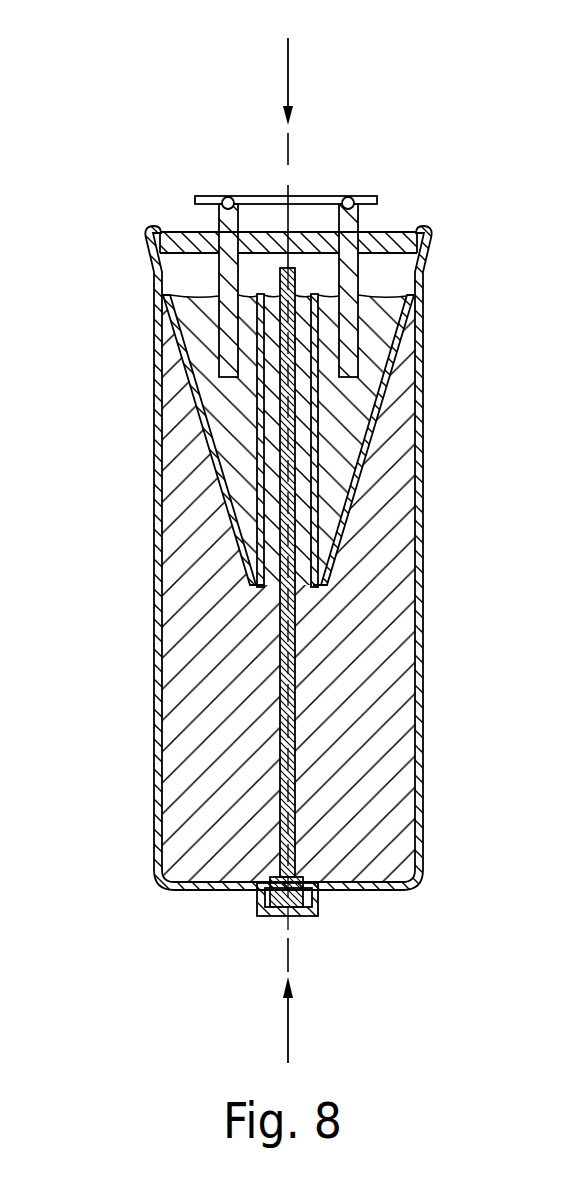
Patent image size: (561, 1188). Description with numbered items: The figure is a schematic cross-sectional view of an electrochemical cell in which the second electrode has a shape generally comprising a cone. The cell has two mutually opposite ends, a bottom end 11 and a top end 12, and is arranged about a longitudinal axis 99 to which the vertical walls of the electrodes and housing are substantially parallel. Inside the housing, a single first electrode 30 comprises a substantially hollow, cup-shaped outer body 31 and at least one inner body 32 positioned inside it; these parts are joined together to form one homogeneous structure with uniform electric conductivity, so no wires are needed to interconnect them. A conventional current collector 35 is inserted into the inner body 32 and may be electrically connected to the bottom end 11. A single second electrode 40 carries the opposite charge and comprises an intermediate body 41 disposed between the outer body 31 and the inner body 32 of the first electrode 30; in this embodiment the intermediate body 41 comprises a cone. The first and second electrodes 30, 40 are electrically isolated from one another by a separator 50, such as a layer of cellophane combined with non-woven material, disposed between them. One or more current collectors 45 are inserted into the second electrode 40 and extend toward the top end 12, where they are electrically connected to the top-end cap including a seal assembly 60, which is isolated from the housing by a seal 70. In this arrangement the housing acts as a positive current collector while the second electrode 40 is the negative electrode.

The bottom end 11 is at (290, 1027).
The top end 12 is at (291, 67).
The first electrode 30 is at (397, 470).
The outer body 31 is at (385, 728).
The inner body 32 is at (268, 563).
The current collector 35 is at (292, 827).
The second electrode 40 is at (243, 492).
The intermediate body 41 is at (385, 327).
The current collectors 45 is at (343, 281).
The separator 50 is at (258, 442).
The seal assembly 60 is at (232, 172).
The seal 70 is at (184, 241).
The longitudinal axis 99 is at (287, 163).